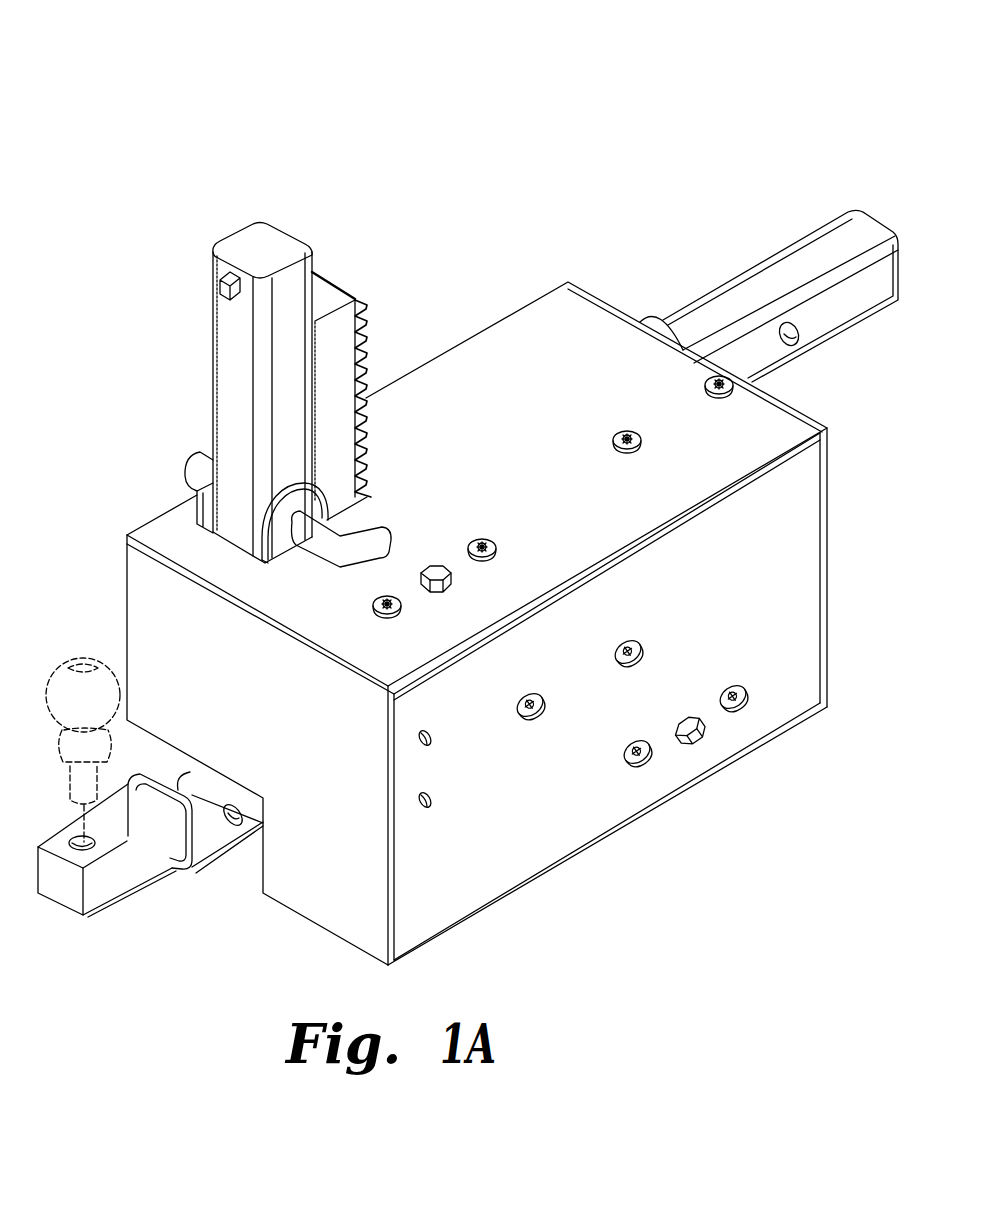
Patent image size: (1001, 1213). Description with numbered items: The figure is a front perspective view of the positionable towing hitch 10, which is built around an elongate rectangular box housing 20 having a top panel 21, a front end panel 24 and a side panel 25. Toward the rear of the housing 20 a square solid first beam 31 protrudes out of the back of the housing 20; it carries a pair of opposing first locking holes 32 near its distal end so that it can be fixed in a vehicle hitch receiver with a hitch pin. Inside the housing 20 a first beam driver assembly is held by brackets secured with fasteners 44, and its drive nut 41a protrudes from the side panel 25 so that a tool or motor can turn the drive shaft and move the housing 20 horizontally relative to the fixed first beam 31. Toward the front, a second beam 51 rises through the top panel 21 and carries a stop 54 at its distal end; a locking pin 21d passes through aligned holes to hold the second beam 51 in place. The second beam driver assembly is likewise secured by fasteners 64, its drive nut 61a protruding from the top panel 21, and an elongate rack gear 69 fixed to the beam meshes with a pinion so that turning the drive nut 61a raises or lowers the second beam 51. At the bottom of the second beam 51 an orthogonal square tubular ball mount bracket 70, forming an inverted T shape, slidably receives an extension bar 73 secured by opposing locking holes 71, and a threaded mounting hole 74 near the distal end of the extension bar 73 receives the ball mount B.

The positionable towing hitch 10 is at (112, 80).
The housing 20 is at (470, 278).
The top panel 21 is at (518, 467).
The locking pin 21d is at (345, 572).
The front end panel 24 is at (308, 732).
The side panel 25 is at (758, 614).
The first beam 31 is at (824, 245).
The first locking holes 32 is at (798, 337).
The drive nut 41a is at (698, 737).
The fasteners 44 is at (726, 395).
The second beam 51 is at (230, 330).
The stop 54 is at (218, 291).
The drive nut 61a is at (441, 560).
The fasteners 64 is at (498, 560).
The rack gear 69 is at (366, 333).
The ball mount bracket 70 is at (200, 850).
The locking holes 71 is at (238, 819).
The extension bar 73 is at (97, 890).
The threaded mounting hole 74 is at (72, 843).
The ball mount B is at (83, 657).